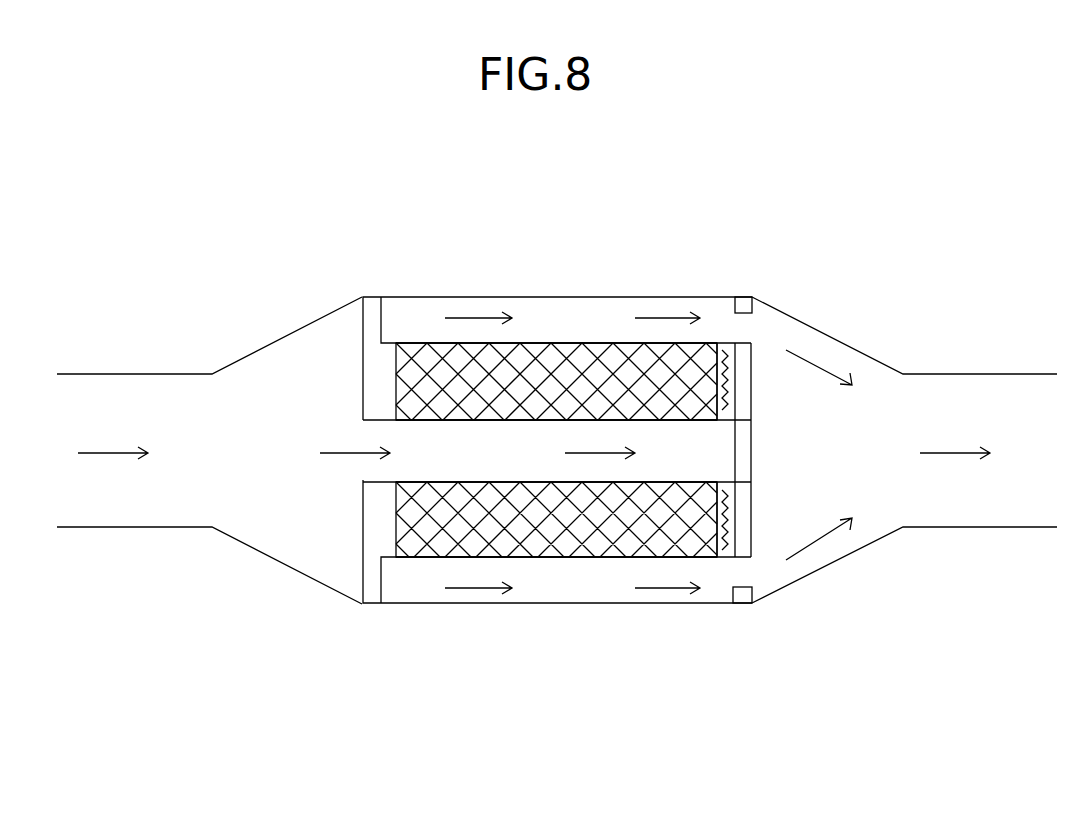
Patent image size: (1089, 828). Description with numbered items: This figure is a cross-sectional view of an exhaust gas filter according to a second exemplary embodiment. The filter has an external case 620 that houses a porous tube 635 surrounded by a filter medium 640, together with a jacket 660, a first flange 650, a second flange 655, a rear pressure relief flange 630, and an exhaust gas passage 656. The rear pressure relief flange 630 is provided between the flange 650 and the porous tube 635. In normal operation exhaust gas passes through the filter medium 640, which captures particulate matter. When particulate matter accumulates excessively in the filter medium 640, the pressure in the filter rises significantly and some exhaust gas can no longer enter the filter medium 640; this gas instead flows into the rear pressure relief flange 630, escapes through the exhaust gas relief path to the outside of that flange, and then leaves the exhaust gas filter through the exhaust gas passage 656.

The external case 620 is at (437, 296).
The jacket 660 is at (540, 341).
The exhaust gas passage 656 is at (742, 327).
The second flange 655 is at (747, 533).
The first flange 650 is at (368, 582).
The filter medium 640 is at (523, 530).
The porous tube 635 is at (563, 472).
The rear pressure relief flange 630 is at (735, 547).